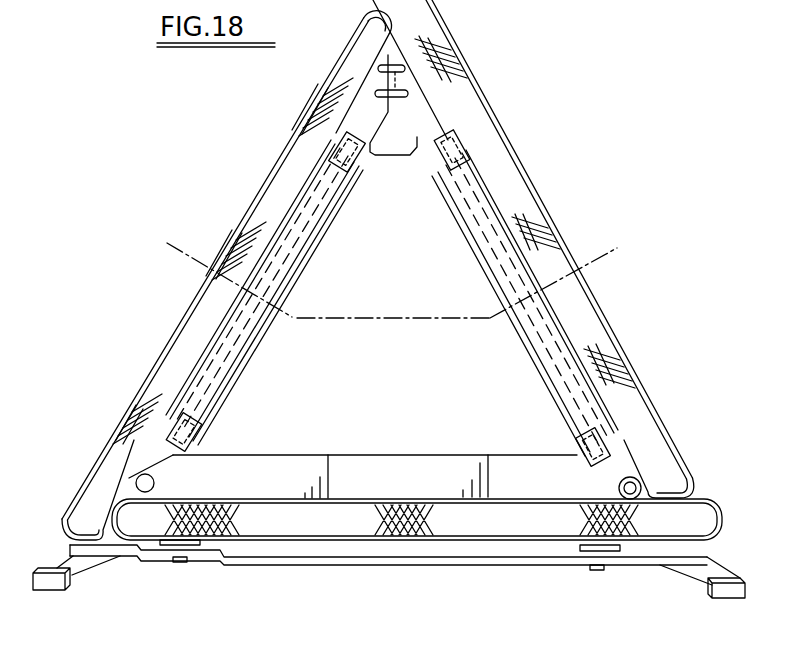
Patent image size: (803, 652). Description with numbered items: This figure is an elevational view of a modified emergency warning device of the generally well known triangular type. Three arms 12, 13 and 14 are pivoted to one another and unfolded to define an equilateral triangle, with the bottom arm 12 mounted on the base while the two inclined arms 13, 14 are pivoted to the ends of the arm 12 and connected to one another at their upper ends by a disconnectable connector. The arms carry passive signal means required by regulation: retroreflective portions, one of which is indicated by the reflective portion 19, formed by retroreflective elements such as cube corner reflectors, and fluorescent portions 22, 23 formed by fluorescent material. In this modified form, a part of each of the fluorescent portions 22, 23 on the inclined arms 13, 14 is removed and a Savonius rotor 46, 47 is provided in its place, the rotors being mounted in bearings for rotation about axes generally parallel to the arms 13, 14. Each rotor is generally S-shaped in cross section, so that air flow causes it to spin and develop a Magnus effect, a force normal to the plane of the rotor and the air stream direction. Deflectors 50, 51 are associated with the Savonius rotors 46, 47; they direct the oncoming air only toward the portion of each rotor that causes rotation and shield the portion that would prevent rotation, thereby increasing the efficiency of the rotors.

The arm 12 is at (355, 518).
The arm 13 is at (292, 179).
The arm 14 is at (490, 166).
The reflective portion 19 is at (210, 222).
The fluorescent portion 22 is at (362, 117).
The fluorescent portion 23 is at (422, 125).
The Savonius rotor 46 is at (233, 390).
The Savonius rotor 47 is at (532, 372).
The deflector 50 is at (247, 333).
The deflector 51 is at (490, 258).